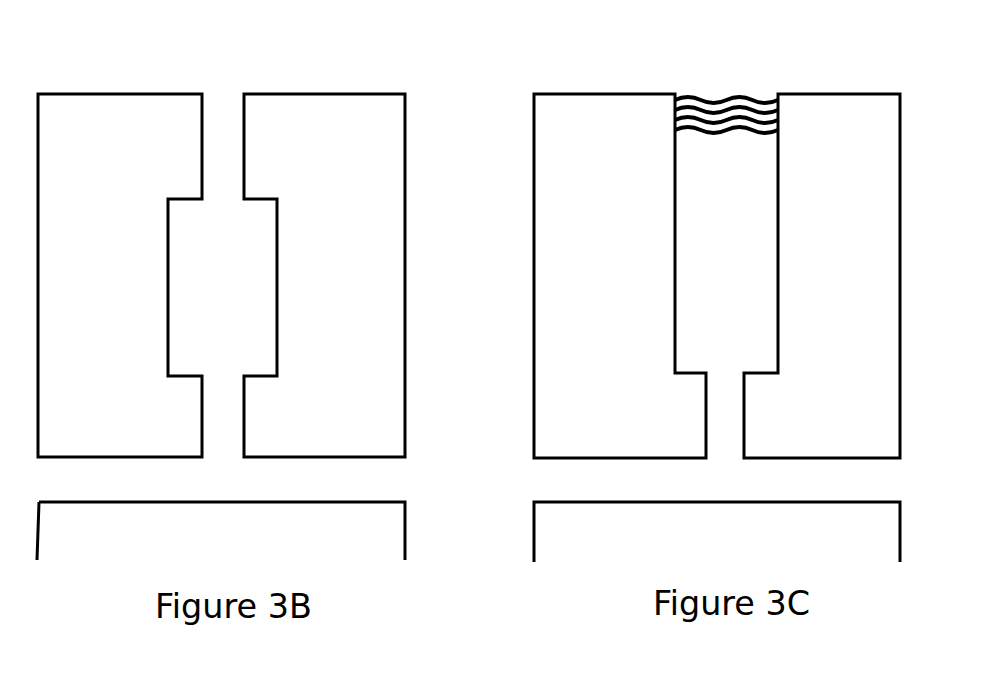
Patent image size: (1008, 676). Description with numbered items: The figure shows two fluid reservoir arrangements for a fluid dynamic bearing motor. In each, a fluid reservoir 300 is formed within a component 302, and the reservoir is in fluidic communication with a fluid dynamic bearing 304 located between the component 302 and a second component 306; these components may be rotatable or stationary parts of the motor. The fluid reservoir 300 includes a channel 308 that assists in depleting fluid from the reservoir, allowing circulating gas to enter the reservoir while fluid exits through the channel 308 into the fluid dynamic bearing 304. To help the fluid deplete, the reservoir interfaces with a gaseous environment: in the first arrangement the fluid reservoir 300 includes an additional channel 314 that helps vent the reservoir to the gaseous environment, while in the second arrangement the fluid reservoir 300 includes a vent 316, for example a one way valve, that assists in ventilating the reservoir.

In FIG. 3B, the fluid reservoir 300 is at (222, 275).
In FIG. 3C, the fluid reservoir 300 is at (726, 233).
In FIG. 3B, the component 302 is at (221, 275).
In FIG. 3C, the component 302 is at (717, 276).
In FIG. 3B, the fluid dynamic bearing 304 is at (223, 435).
In FIG. 3C, the fluid dynamic bearing 304 is at (725, 430).
In FIG. 3B, the component 306 is at (221, 531).
In FIG. 3C, the component 306 is at (717, 532).
In FIG. 3B, the channel 308 is at (244, 412).
In FIG. 3C, the channel 308 is at (706, 413).
In FIG. 3B, the additional channel 314 is at (244, 169).
In FIG. 3C, the vent 316 is at (753, 92).